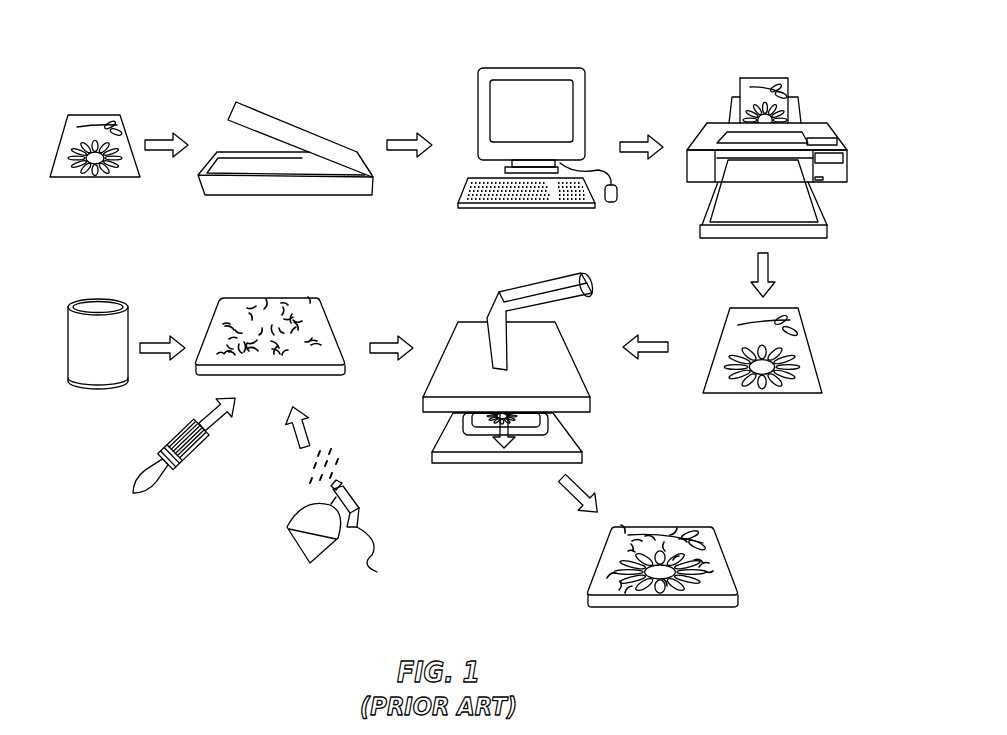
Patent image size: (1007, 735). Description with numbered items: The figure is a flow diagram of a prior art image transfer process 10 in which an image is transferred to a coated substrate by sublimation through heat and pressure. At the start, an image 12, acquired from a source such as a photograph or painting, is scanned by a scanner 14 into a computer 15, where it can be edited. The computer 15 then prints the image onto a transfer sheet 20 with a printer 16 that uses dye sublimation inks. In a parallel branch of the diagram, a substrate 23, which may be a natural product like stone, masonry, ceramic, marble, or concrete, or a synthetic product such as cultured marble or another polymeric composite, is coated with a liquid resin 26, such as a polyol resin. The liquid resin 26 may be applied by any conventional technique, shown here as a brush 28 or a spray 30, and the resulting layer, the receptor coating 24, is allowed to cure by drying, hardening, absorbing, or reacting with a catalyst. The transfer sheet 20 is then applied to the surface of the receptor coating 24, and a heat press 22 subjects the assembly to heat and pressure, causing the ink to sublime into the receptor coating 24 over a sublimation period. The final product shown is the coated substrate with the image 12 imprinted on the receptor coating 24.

The image transfer process 10 is at (100, 86).
The image 12 is at (95, 183).
The scanner 14 is at (247, 185).
The computer 15 is at (541, 121).
The printer 16 is at (697, 172).
The transfer sheet 20 is at (767, 87).
The heat press 22 is at (563, 382).
The substrate 23 is at (317, 300).
The receptor coating 24 is at (263, 308).
The liquid resin 26 is at (107, 356).
The brush 28 is at (172, 465).
The spray 30 is at (318, 543).